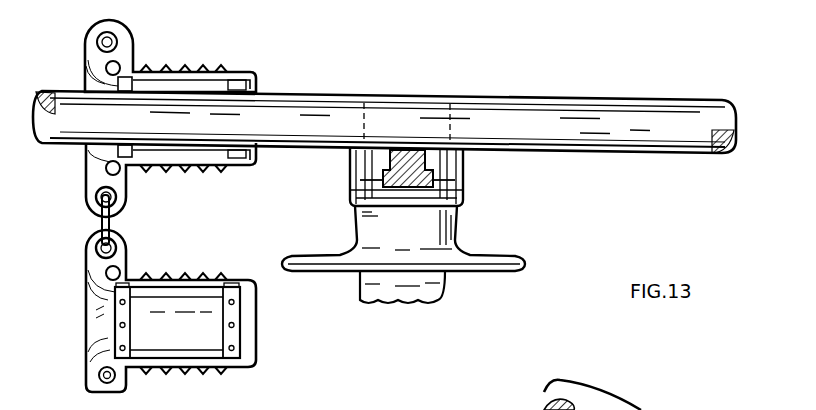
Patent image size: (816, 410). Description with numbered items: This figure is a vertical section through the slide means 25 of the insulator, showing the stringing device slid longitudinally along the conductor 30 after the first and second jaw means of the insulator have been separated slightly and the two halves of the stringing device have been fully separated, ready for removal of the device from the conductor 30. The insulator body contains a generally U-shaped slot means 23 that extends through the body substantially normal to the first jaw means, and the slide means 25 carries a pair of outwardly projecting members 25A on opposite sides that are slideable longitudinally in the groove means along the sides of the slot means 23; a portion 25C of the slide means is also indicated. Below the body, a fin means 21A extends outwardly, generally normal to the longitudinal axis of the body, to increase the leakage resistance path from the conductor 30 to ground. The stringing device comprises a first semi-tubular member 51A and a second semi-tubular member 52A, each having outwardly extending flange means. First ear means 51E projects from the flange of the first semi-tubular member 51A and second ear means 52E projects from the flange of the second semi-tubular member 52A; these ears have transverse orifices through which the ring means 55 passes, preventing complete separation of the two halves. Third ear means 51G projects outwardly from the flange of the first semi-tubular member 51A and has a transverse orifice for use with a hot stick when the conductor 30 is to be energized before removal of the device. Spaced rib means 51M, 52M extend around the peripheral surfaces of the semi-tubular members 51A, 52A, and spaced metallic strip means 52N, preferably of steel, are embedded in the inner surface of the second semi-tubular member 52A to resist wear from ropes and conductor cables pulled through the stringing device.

The conductor 30 is at (482, 100).
The third ear means 51G is at (132, 36).
The first semi-tubular member 51A is at (198, 70).
The rib means 51M is at (214, 73).
The first ear means 51E is at (128, 188).
The ring means 55 is at (110, 222).
The second ear means 52E is at (128, 255).
The rib means 52M is at (206, 374).
The second semi-tubular member 52A is at (184, 374).
The metallic strip means 52N is at (118, 314).
The U-shaped slot means 23 is at (356, 166).
The slide means 25 is at (440, 163).
The outwardly projecting members 25A is at (360, 188).
The fin means 21A is at (514, 258).
The fastener portion 25C is at (658, 409).